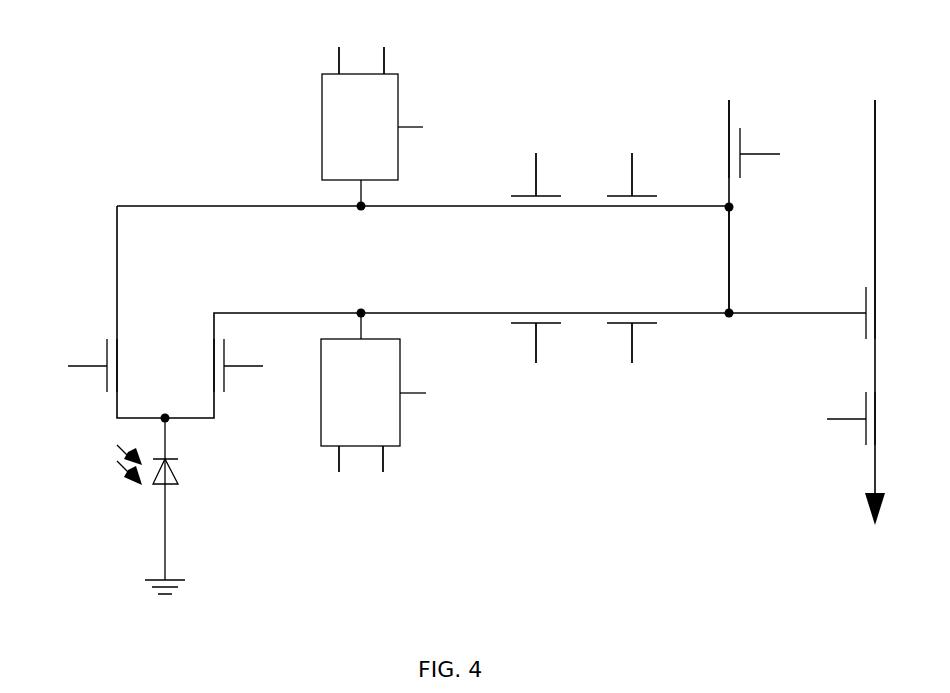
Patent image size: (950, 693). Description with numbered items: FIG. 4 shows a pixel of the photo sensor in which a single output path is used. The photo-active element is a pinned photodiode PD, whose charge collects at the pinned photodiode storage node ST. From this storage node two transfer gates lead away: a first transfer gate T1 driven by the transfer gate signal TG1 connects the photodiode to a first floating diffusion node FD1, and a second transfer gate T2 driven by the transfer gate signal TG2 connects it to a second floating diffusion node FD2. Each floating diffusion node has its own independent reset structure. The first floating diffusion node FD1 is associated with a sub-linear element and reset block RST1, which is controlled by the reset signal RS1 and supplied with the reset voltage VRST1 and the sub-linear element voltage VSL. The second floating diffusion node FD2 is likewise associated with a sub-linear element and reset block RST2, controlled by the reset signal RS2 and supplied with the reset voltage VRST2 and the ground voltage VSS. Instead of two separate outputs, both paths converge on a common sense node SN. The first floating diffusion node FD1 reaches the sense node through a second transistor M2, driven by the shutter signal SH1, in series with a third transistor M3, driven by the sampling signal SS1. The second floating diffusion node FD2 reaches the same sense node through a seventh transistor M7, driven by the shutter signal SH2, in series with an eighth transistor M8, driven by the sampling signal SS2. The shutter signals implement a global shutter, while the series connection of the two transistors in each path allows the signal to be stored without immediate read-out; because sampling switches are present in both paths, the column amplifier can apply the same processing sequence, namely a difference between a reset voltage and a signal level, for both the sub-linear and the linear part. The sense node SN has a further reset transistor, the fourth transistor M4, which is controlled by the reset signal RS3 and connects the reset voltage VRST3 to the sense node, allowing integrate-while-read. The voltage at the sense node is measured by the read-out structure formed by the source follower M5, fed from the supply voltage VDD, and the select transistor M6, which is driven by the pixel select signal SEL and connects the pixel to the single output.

The photodiode PD is at (151, 506).
The pinned photodiode storage node ST is at (184, 431).
The second transfer gate T2 is at (131, 365).
The transfer gate signal TG2 is at (65, 368).
The first transfer gate T1 is at (200, 365).
The transfer gate signal TG1 is at (266, 368).
The sub-linear element / reset element RST2 is at (360, 126).
The reset voltage VRST2 is at (314, 46).
The ground voltage VSS is at (393, 46).
The reset signal RS2 is at (433, 130).
The second floating diffusion node FD2 is at (360, 221).
The sub-linear element / reset element RST1 is at (360, 392).
The first floating diffusion node FD1 is at (361, 300).
The reset signal RS1 is at (435, 395).
The reset voltage VRST1 is at (312, 475).
The sub-linear element voltage VSL is at (395, 475).
The seventh transistor M7 is at (536, 194).
The shutter signal SH2 is at (535, 162).
The eighth transistor M8 is at (632, 194).
The sampling signal SS2 is at (632, 162).
The second transistor M2 is at (536, 324).
The shutter signal SH1 is at (535, 359).
The third transistor M3 is at (632, 324).
The sampling signal SS1 is at (632, 359).
The fourth transistor M4 is at (715, 153).
The reset signal RS3 is at (781, 156).
The reset voltage VRST3 is at (729, 101).
The sense node SN is at (745, 260).
The supply voltage VDD is at (874, 180).
The source follower M5 is at (890, 313).
The select transistor M6 is at (889, 458).
The pixel select signal SEL is at (822, 421).